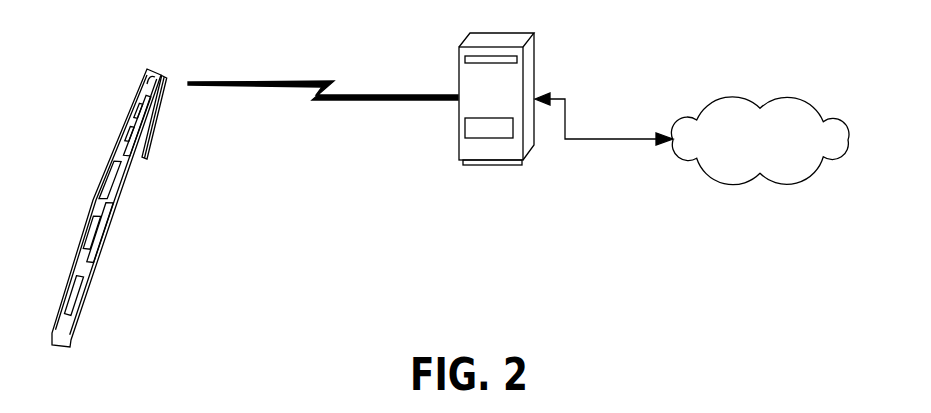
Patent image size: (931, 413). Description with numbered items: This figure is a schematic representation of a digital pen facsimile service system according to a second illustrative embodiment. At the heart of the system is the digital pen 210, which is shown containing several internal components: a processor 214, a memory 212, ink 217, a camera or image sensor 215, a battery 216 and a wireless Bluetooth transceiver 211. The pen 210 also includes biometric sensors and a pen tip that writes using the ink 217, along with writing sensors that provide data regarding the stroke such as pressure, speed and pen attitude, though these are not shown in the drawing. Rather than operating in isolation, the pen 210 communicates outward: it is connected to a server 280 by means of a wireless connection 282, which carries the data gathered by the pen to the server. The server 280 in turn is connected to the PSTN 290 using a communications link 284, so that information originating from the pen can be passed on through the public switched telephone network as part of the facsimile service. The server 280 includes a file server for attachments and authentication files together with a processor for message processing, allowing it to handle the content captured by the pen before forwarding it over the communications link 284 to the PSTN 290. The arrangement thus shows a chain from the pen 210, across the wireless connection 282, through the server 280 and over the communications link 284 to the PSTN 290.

The digital pen 210 is at (127, 80).
The wireless Bluetooth transceiver 211 is at (126, 113).
The memory 212 is at (153, 127).
The processor 214 is at (104, 240).
The camera or image sensor 215 is at (80, 317).
The battery 216 is at (102, 183).
The ink 217 is at (78, 277).
The server 280 is at (485, 164).
The wireless connection 282 is at (366, 92).
The communications link 284 is at (636, 139).
The PSTN 290 is at (742, 98).